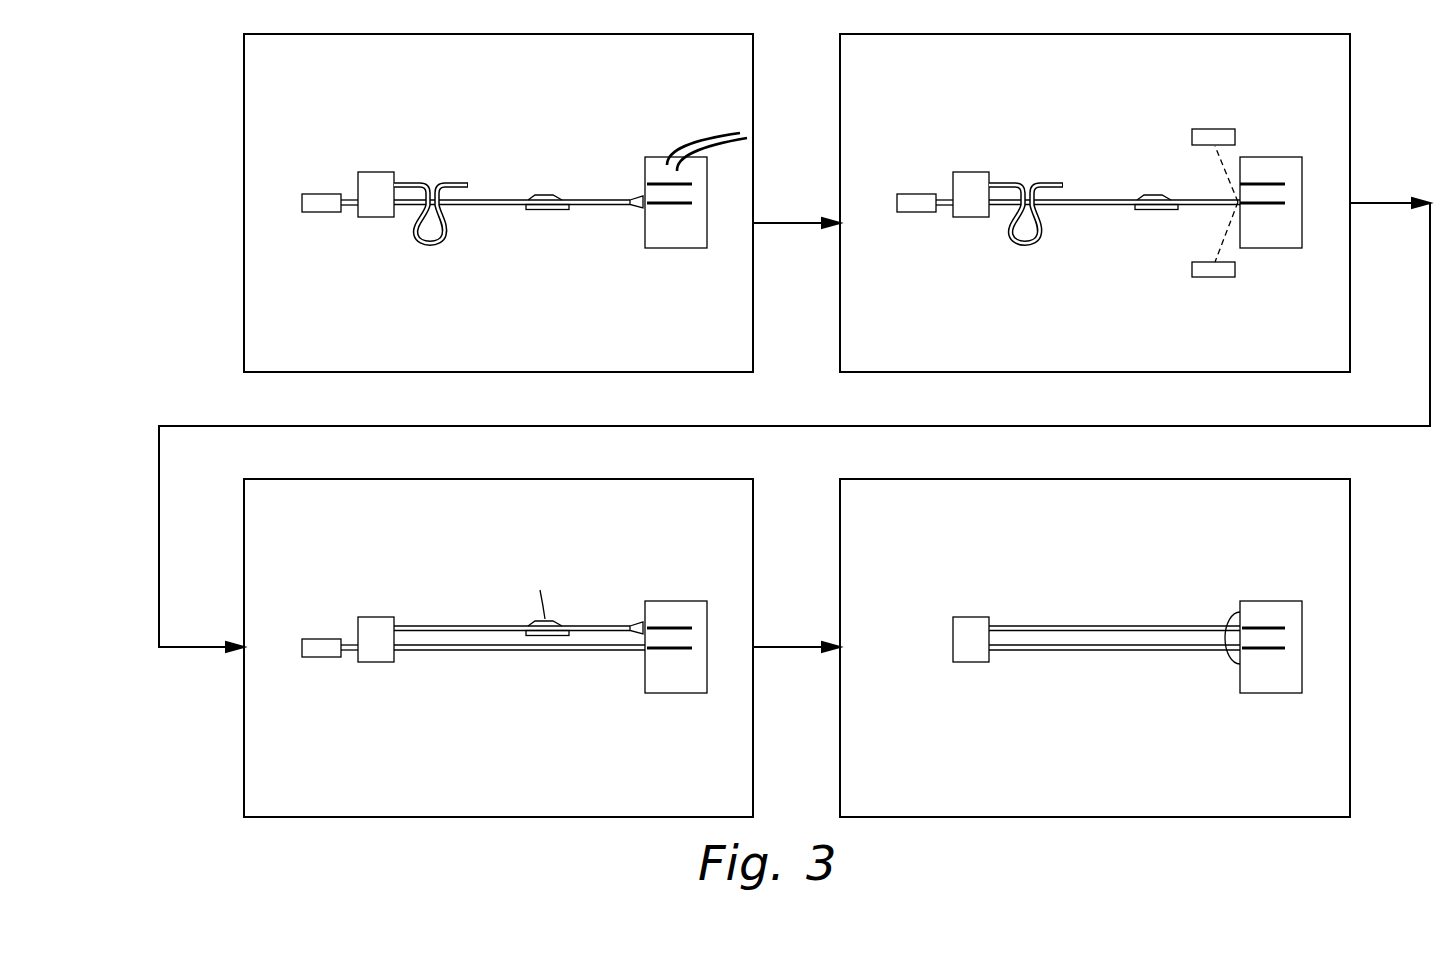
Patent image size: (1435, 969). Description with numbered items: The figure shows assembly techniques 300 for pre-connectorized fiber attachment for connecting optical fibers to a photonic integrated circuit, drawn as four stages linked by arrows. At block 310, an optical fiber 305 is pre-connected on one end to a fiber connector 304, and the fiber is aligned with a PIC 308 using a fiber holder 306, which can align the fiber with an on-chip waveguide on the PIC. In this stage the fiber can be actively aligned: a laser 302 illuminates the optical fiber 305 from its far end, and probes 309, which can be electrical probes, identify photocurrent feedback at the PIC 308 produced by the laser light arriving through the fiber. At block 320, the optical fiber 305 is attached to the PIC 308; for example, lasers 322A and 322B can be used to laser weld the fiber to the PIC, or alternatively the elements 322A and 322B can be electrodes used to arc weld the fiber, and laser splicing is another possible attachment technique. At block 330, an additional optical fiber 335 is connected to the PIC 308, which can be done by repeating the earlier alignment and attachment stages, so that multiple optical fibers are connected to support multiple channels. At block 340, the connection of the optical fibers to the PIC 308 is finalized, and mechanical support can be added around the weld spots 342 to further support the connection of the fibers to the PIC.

The assembly techniques 300 is at (188, 62).
The laser 302 is at (321, 193).
The fiber connector 304 is at (381, 172).
The optical fiber 305 is at (510, 199).
The fiber holder 306 is at (545, 212).
The PIC 308 is at (680, 250).
The probes 309 is at (710, 132).
The block 310 is at (498, 203).
The block 320 is at (1095, 203).
The laser 322A is at (1212, 128).
The laser 322B is at (1212, 278).
The block 330 is at (498, 648).
The additional optical fiber 335 is at (468, 627).
The block 340 is at (1095, 648).
The weld spots 342 is at (1235, 616).